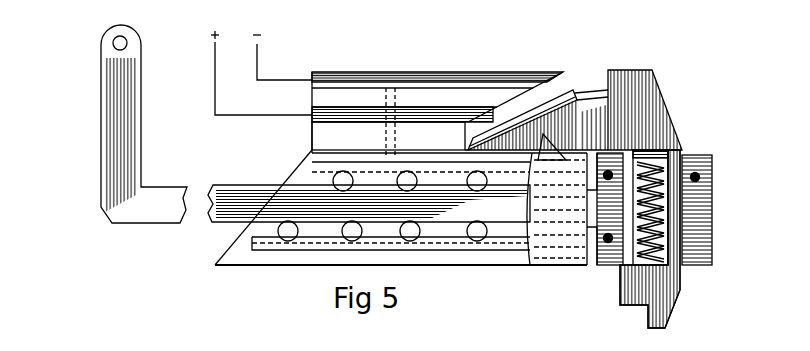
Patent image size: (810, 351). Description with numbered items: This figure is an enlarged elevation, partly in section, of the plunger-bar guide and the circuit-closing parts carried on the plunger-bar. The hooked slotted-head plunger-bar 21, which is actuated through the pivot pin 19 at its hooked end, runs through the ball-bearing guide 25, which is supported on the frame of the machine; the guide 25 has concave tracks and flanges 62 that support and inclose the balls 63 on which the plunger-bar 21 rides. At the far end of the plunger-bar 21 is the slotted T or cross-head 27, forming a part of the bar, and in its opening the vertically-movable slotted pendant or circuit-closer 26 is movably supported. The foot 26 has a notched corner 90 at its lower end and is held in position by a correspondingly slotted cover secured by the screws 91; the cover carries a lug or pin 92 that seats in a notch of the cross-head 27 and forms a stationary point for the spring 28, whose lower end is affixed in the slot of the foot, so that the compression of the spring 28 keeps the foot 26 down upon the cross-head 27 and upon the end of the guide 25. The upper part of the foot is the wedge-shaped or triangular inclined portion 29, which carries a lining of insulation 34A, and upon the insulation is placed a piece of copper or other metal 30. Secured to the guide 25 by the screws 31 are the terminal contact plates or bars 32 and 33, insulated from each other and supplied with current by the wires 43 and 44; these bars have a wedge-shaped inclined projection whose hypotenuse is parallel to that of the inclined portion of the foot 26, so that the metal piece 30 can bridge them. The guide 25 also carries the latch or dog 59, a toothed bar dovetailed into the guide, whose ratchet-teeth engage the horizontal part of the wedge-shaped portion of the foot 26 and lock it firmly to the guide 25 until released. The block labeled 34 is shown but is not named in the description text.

The pivot 19 is at (127, 43).
The hooked slotted-head plunger-bar 21 is at (247, 175).
The wire 43 is at (258, 53).
The wire 44 is at (216, 56).
The terminal contact plate 32 is at (357, 77).
The terminal contact plate 33 is at (312, 112).
The guide block 34 is at (404, 122).
The screw 31 is at (397, 125).
The piece of copper 30 is at (565, 99).
The lining of insulation 34A is at (583, 118).
The wedge-shaped inclined upper portion 29 is at (600, 120).
The latch 59 is at (551, 161).
The ball-bearing guide 25 is at (543, 267).
The concave tracks and flanges 62 is at (313, 165).
The balls 63 is at (472, 237).
The slotted cross-head 27 is at (712, 258).
The screws 91 is at (702, 174).
The lug or pin 92 is at (668, 152).
The spring 28 is at (655, 218).
The circuit-closer 26 is at (670, 310).
The notched corner 90 is at (650, 239).